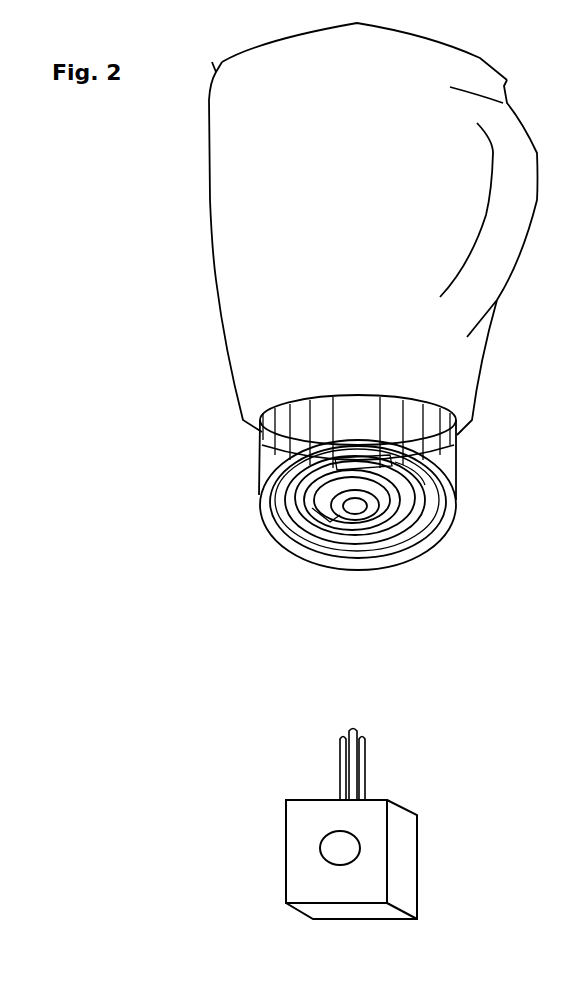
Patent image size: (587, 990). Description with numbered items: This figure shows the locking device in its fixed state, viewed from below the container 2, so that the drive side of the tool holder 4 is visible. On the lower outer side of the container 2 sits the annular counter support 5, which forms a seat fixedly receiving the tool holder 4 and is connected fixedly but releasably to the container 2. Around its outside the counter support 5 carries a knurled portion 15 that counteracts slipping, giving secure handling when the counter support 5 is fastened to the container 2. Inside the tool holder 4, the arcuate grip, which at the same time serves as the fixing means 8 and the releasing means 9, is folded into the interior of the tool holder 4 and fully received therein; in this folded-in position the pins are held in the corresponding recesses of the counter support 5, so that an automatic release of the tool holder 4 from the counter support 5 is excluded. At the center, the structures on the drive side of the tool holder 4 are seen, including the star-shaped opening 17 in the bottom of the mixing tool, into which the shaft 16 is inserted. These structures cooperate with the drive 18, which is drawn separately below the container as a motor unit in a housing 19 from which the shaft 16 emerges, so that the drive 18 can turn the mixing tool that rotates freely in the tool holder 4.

The container 2 is at (245, 227).
The knurled portion 15 is at (290, 431).
The counter support 5 is at (417, 547).
The tool holder 4 is at (378, 547).
The fixing means 8 is at (345, 549).
The releasing means 9 is at (328, 530).
The star-shaped opening 17 is at (360, 508).
The housing of drive unit 19 is at (417, 842).
The drive 18 is at (322, 852).
The shaft 16 is at (365, 786).